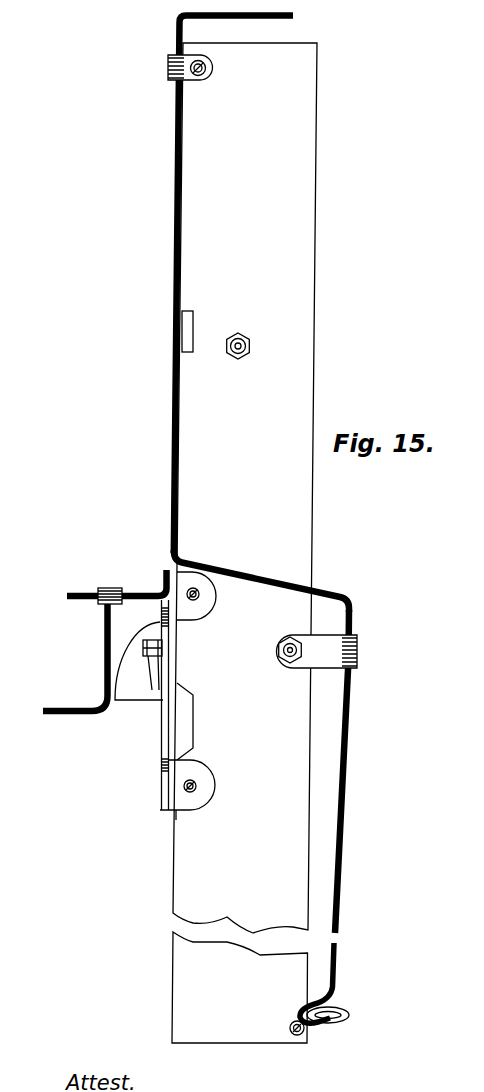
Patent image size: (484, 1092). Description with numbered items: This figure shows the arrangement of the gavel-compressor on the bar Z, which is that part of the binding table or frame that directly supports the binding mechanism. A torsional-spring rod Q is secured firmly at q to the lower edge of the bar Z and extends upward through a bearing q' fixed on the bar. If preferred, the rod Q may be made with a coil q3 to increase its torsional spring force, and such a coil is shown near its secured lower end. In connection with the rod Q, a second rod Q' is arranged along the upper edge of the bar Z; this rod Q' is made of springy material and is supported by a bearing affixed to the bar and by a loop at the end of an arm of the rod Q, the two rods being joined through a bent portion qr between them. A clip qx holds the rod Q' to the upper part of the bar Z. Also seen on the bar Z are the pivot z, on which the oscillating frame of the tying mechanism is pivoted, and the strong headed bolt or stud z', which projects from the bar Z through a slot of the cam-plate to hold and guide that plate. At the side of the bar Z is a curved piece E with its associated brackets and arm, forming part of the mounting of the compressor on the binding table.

The bar Z is at (244, 543).
The rod Q' is at (233, 285).
The rod clip qx is at (176, 68).
The pivot z is at (247, 346).
The inclined rod portion qr is at (261, 581).
The torsional-spring rod Q is at (333, 816).
The coil q3 is at (343, 1015).
The securing point q is at (288, 1030).
The bearing q' is at (330, 652).
The headed bolt or stud z' is at (274, 650).
The cam piece E is at (158, 673).